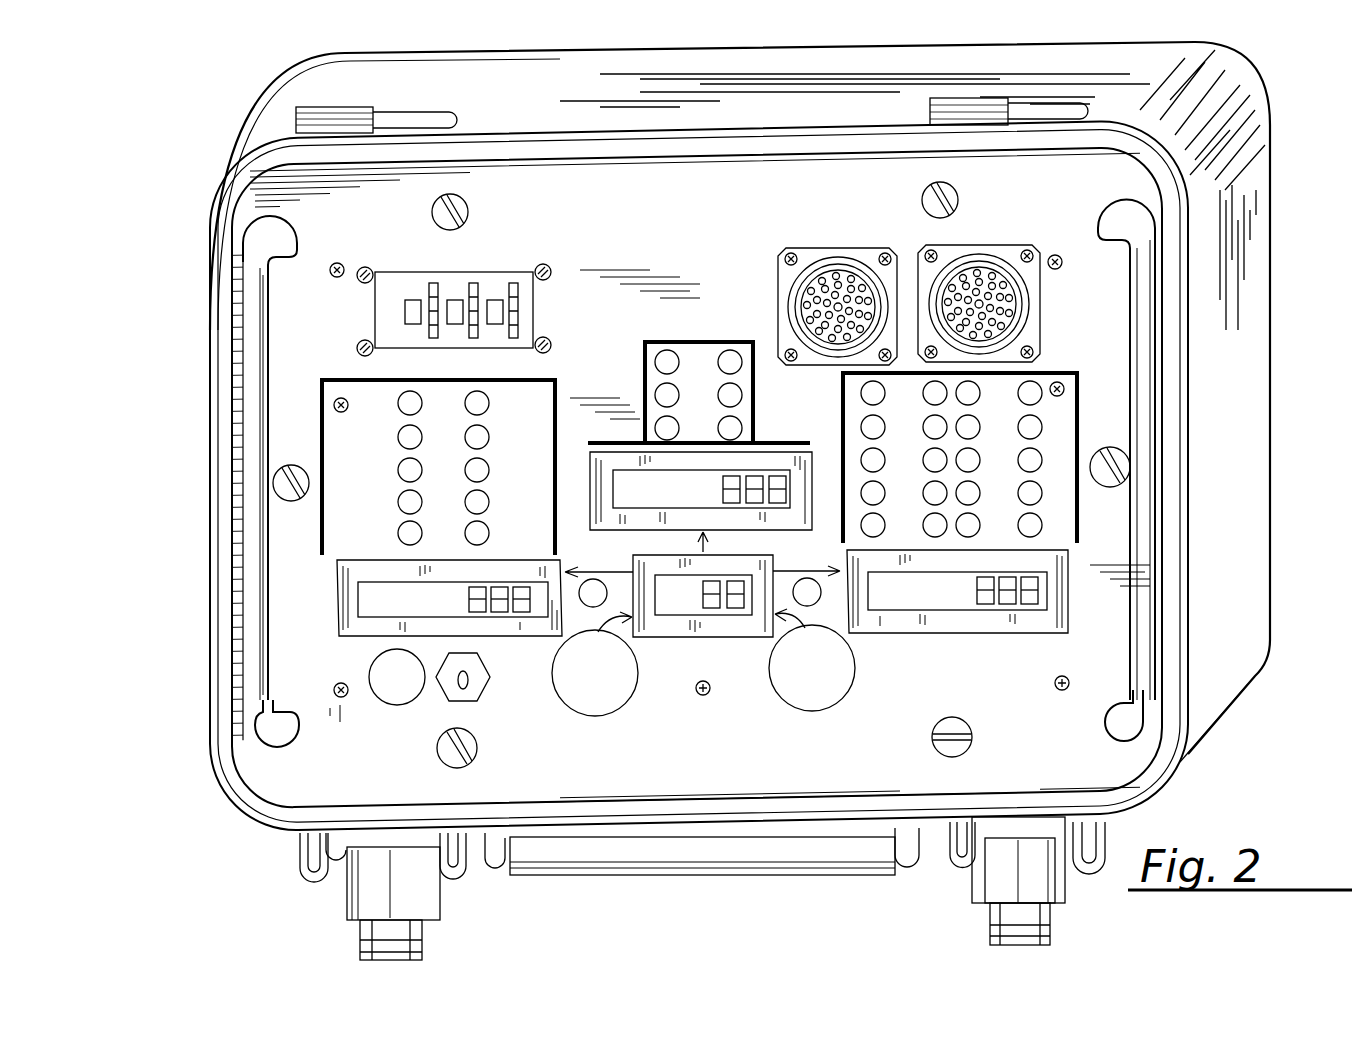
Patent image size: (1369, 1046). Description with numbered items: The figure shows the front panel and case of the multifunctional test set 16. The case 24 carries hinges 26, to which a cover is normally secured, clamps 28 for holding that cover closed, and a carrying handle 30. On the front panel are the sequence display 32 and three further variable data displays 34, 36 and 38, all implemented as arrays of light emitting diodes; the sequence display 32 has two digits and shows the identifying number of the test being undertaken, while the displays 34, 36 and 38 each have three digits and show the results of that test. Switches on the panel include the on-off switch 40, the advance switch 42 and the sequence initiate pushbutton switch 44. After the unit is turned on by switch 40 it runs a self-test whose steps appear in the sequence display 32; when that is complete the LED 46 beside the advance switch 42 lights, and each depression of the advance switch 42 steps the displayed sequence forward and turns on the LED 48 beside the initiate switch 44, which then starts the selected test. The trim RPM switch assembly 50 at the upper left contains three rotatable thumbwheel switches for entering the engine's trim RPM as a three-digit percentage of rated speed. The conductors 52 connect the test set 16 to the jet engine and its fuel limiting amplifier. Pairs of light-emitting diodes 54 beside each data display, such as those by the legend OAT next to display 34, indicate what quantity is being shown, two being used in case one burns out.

The test set 16 is at (195, 548).
The case 24 is at (212, 748).
The hinges 26 is at (292, 114).
The clamps 28 is at (415, 905).
The carrying handle 30 is at (683, 862).
The sequence display 32 is at (750, 606).
The variable display 34 is at (375, 586).
The variable display 36 is at (760, 477).
The variable display 38 is at (988, 605).
The on-off switch 40 is at (468, 680).
The advance switch 42 is at (840, 685).
The sequence initiate pushbutton switch 44 is at (615, 686).
The LED 46 is at (806, 578).
The LED 48 is at (597, 578).
The trim RPM switch assembly 50 is at (388, 273).
The conductors 52 is at (948, 252).
The light-emitting diodes 54 is at (467, 425).